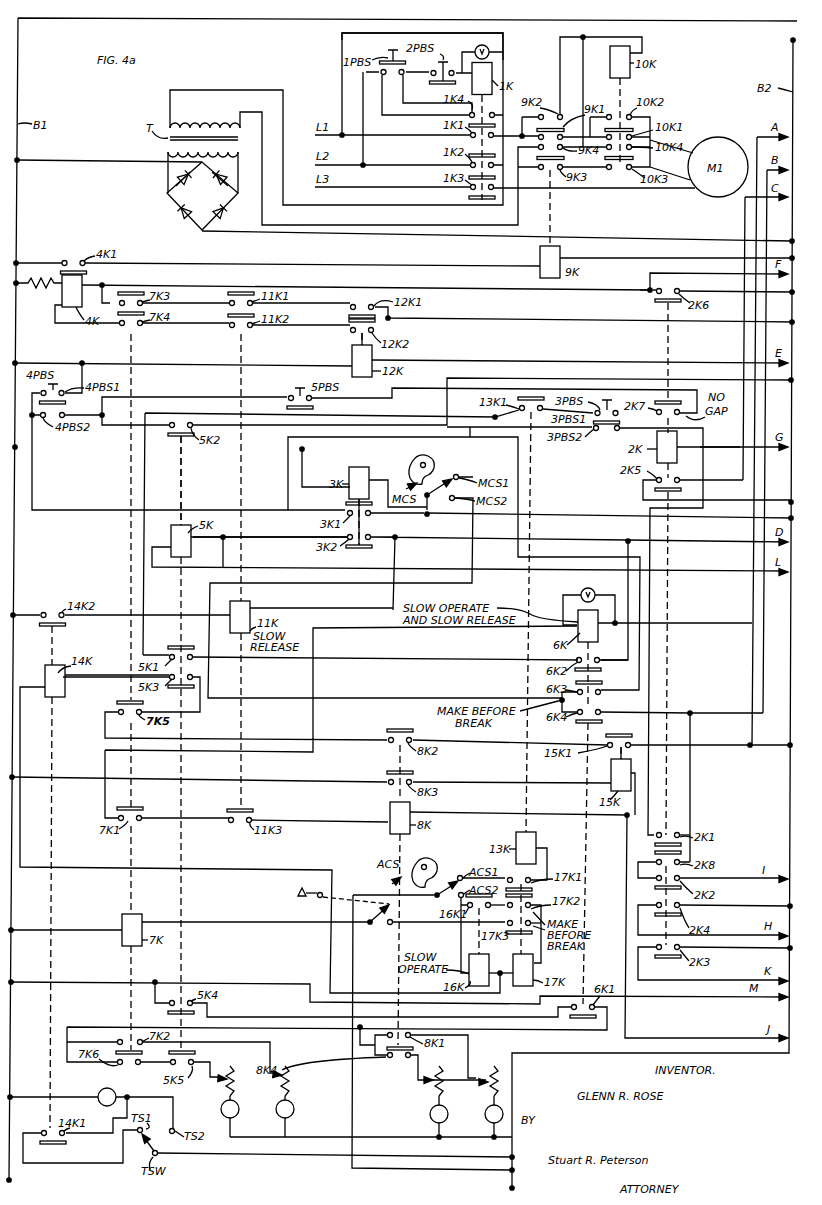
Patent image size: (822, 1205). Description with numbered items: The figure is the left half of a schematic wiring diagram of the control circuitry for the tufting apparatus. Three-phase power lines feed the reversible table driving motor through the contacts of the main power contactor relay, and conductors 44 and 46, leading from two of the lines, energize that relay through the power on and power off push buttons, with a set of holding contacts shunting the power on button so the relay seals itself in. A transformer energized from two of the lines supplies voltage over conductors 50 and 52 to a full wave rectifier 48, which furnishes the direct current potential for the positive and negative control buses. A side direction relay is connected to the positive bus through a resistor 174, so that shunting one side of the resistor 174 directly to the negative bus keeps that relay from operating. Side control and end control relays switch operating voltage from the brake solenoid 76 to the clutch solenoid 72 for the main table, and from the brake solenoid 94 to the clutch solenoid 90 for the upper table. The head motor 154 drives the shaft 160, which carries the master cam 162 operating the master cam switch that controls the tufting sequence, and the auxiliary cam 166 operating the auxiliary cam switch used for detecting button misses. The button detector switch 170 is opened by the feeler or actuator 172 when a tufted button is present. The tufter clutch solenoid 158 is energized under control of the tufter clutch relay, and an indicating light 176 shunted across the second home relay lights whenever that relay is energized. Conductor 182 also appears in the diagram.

The conductor 44 is at (363, 88).
The conductor 46 is at (342, 92).
The full wave rectifier 48 is at (212, 205).
The conductor 50 is at (170, 190).
The conductor 52 is at (240, 196).
The clutch solenoid 72 is at (294, 1106).
The brake solenoid 76 is at (239, 1106).
The clutch solenoid 90 is at (487, 1109).
The brake solenoid 94 is at (431, 1109).
The head motor 154 is at (650, 290).
The tufter clutch solenoid 158 is at (120, 1089).
The shaft 160 is at (420, 466).
The master cam 162 is at (438, 476).
The auxiliary cam 166 is at (438, 879).
The button detector switch 170 is at (386, 903).
The actuator 172 is at (316, 893).
The resistor 174 is at (39, 291).
The indicating light 176 is at (581, 594).
The conductor 182 is at (739, 444).